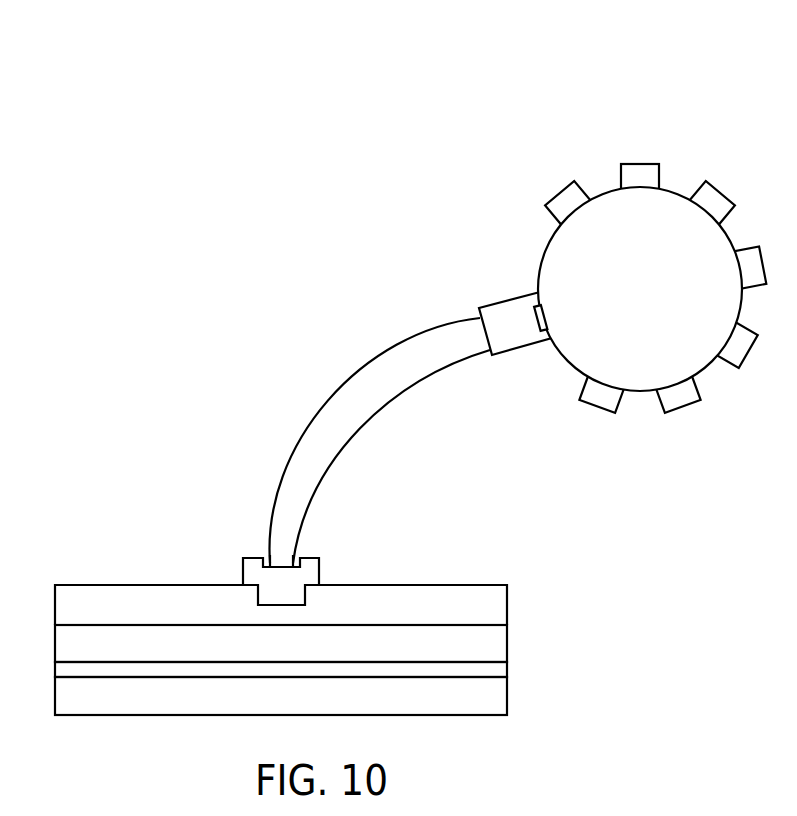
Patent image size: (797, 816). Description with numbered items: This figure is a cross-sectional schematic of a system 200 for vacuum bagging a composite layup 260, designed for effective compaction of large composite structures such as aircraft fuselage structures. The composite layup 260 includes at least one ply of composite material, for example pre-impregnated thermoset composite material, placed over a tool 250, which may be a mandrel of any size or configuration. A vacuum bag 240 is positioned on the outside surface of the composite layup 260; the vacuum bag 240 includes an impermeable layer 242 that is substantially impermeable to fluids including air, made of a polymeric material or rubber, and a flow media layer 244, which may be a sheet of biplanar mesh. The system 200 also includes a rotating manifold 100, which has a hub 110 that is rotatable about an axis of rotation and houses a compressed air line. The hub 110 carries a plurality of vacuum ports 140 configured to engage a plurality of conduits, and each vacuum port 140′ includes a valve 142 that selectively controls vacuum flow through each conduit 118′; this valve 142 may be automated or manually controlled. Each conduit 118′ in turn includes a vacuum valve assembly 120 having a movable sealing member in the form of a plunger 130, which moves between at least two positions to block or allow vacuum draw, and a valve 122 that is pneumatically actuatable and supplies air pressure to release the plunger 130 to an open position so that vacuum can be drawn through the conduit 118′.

The system for vacuum bagging a composite layup 200 is at (312, 113).
The rotating manifold 100 is at (497, 138).
The hub 110 is at (545, 254).
The plurality of vacuum ports 140 is at (690, 183).
The vacuum port 140′ is at (554, 196).
The valve 142 is at (540, 305).
The conduit 118′ is at (355, 378).
The vacuum valve assembly 120 is at (319, 571).
The valve 122 is at (270, 560).
The plunger 130 is at (293, 560).
The vacuum bag 240 is at (525, 576).
The impermeable layer 242 is at (472, 585).
The flow media layer 244 is at (507, 638).
The composite layup 260 is at (507, 670).
The tool 250 is at (507, 705).